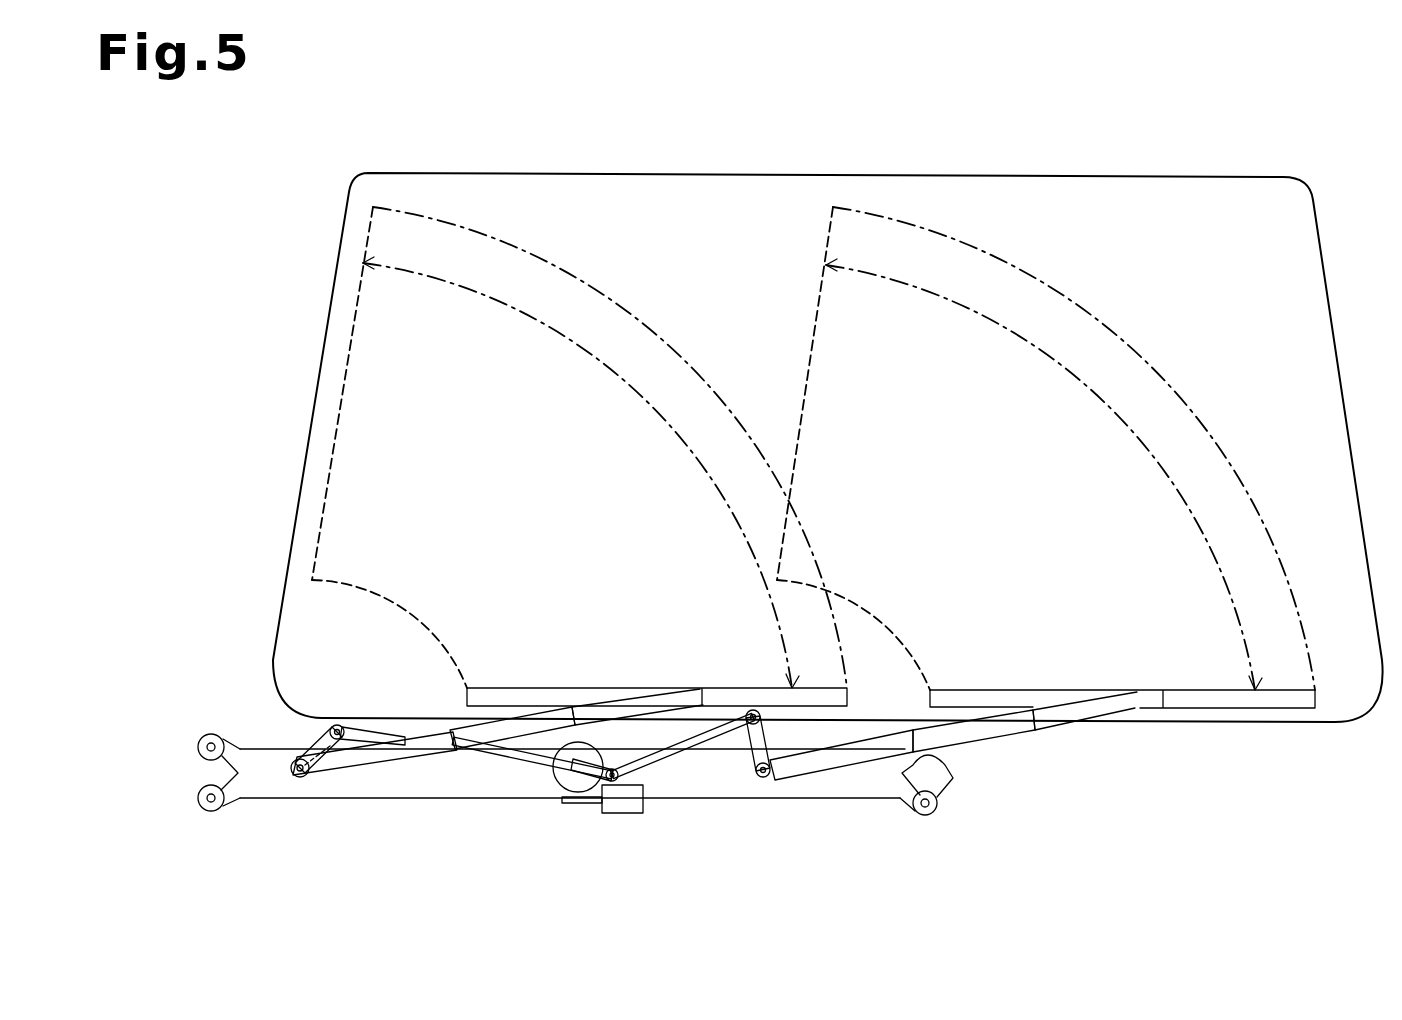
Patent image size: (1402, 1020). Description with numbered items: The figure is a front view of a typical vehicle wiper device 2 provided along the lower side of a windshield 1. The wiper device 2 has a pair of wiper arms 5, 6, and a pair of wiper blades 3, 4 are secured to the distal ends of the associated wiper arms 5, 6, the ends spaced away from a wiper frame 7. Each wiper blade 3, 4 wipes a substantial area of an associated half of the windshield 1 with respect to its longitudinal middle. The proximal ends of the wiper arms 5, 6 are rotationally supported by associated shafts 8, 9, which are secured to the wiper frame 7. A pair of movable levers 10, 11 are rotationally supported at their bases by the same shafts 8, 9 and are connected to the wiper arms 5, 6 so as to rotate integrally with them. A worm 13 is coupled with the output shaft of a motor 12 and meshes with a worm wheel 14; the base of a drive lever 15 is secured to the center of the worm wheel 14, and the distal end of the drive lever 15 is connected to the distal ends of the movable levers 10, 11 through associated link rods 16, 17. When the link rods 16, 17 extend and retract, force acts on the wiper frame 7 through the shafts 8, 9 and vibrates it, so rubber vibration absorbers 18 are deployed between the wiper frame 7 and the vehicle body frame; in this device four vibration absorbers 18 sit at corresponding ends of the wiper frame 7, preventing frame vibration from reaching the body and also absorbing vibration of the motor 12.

The windshield 1 is at (1282, 213).
The wiper device 2 is at (802, 852).
The wiper blade 3 is at (848, 688).
The wiper blade 4 is at (1297, 690).
The wiper arm 5 is at (466, 738).
The wiper arm 6 is at (1030, 734).
The wiper frame 7 is at (388, 787).
The shaft 8 is at (297, 778).
The shaft 9 is at (757, 772).
The movable lever 10 is at (325, 742).
The movable lever 11 is at (765, 738).
The motor 12 is at (627, 813).
The worm 13 is at (583, 803).
The worm wheel 14 is at (563, 782).
The drive lever 15 is at (611, 760).
The link rod 16 is at (372, 732).
The link rod 17 is at (660, 765).
The vibration absorber 18 is at (205, 742).